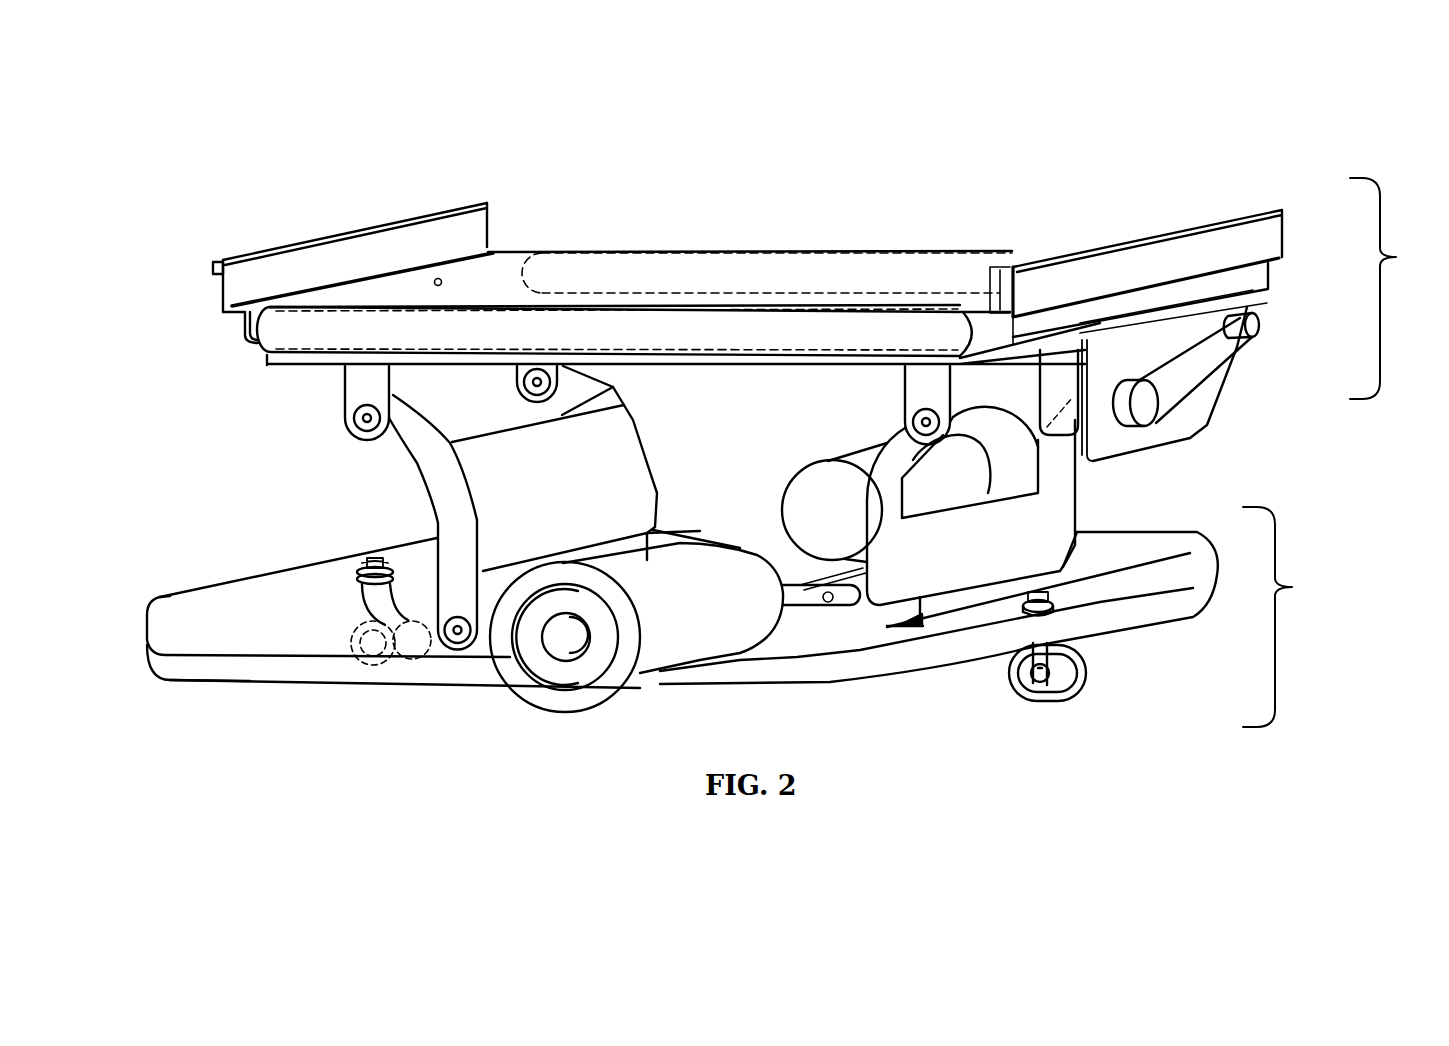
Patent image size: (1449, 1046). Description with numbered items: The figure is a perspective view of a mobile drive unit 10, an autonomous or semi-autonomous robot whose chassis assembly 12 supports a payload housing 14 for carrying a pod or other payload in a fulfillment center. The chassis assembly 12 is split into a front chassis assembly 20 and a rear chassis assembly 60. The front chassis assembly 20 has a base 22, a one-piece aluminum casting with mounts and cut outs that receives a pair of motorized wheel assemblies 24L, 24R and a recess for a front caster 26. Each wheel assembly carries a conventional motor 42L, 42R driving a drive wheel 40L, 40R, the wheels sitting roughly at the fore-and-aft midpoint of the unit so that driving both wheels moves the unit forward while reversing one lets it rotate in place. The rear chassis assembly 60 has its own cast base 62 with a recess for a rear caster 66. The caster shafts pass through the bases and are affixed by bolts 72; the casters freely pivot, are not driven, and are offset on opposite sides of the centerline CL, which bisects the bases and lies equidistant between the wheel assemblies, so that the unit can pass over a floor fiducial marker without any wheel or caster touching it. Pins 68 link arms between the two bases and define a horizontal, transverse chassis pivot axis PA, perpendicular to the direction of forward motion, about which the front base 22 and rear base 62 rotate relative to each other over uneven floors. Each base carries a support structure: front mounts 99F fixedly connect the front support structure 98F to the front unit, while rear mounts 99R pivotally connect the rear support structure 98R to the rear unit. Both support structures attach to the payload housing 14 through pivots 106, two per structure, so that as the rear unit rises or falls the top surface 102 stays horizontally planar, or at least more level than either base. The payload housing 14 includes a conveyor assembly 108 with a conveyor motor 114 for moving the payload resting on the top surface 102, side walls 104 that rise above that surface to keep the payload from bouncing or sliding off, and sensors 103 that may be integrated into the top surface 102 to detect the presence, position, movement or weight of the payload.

The mobile drive unit 10 is at (226, 161).
The chassis assembly 12 is at (1289, 617).
The payload housing 14 is at (1394, 288).
The front chassis assembly 20 is at (955, 662).
The base 22 is at (805, 642).
The motorized wheel assembly 24L is at (993, 423).
The motorized wheel assembly 24R is at (567, 640).
The front caster 26 is at (1062, 687).
The drive wheel 40L is at (1017, 465).
The drive wheel 40R is at (577, 702).
The motor 42L is at (842, 519).
The motor 42R is at (740, 616).
The rear chassis assembly 60 is at (265, 680).
The base 62 is at (187, 665).
The rear caster 66 is at (370, 632).
The pins 68 is at (797, 587).
The bolts 72 is at (373, 560).
The front support structure 98F is at (1005, 564).
The rear support structure 98R is at (566, 489).
The front mounts 99F is at (910, 627).
The rear mounts 99R is at (448, 638).
The top surface 102 is at (628, 272).
The sensors 103 is at (443, 280).
The walls 104 is at (380, 238).
The pivots 106 is at (362, 417).
The conveyor assembly 108 is at (1260, 323).
The conveyor motor 114 is at (1058, 370).
The centerline CL is at (370, 572).
The chassis pivot axis PA is at (518, 718).